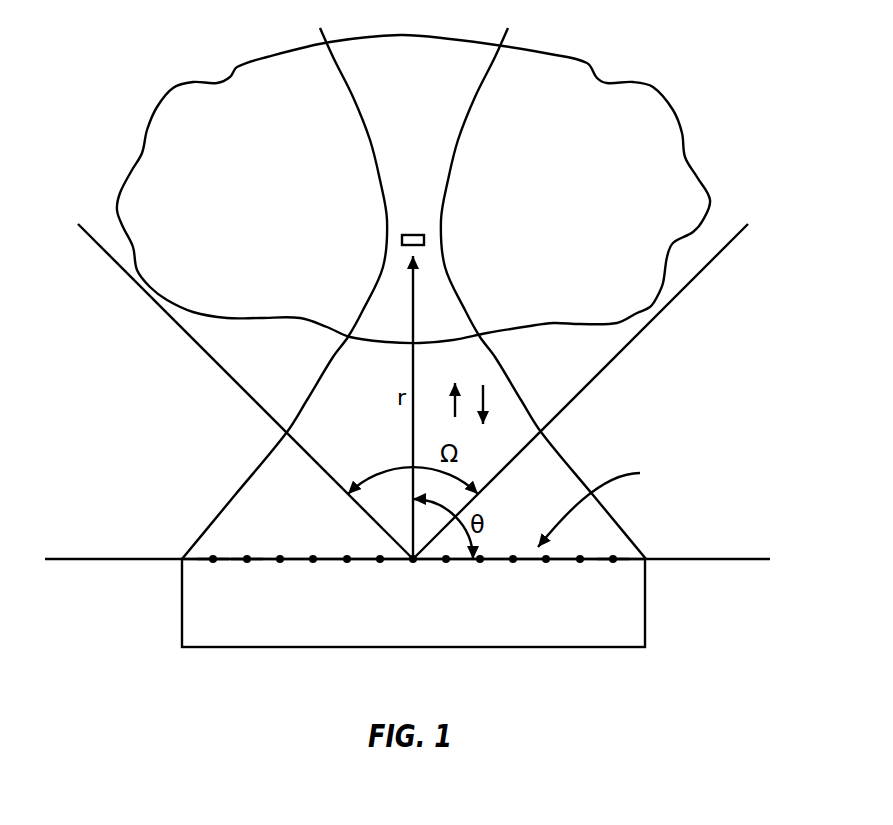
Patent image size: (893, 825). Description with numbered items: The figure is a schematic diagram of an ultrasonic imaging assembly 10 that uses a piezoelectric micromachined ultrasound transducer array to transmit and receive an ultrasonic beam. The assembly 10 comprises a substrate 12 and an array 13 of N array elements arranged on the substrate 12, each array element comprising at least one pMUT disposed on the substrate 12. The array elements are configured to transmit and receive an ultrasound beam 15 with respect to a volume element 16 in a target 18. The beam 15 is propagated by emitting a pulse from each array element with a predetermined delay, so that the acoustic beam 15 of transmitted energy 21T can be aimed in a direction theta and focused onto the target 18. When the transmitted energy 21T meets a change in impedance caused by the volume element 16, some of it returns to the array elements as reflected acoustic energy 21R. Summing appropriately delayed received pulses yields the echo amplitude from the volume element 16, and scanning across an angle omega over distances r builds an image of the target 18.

The ultrasonic imaging assembly 10 is at (125, 532).
The substrate 12 is at (182, 603).
The array 13 is at (604, 505).
The ultrasound beam 15 is at (513, 387).
The volume element 16 is at (424, 240).
The target 18 is at (677, 112).
The transmitted acoustic energy 21T is at (456, 384).
The reflected acoustic energy 21R is at (486, 419).